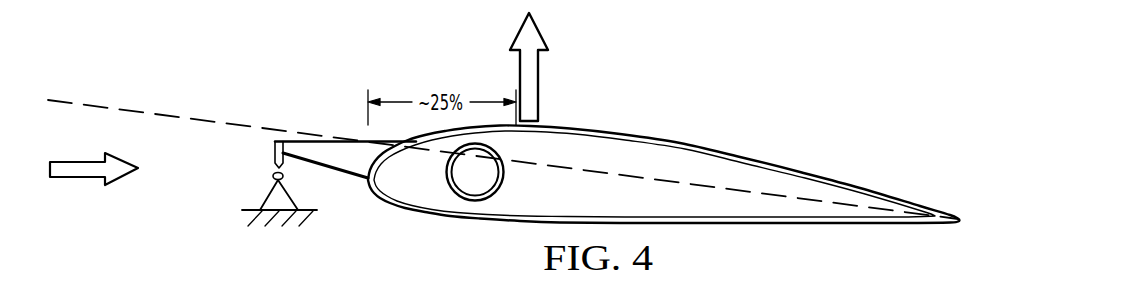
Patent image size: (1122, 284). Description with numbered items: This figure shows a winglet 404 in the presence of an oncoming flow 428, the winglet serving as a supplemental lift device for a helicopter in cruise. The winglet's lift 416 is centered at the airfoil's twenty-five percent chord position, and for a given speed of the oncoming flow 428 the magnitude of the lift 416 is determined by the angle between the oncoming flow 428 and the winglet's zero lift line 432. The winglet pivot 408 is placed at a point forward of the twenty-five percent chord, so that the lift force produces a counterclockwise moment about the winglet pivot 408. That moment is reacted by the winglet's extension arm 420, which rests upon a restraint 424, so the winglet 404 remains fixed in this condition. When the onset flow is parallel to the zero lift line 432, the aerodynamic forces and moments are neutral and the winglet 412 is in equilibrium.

The winglet 404 is at (793, 126).
The winglet pivot 408 is at (473, 183).
The winglet 412 is at (370, 182).
The lift 416 is at (538, 85).
The extension arm 420 is at (304, 140).
The restraint 424 is at (267, 193).
The oncoming flow 428 is at (77, 180).
The zero lift line 432 is at (630, 174).